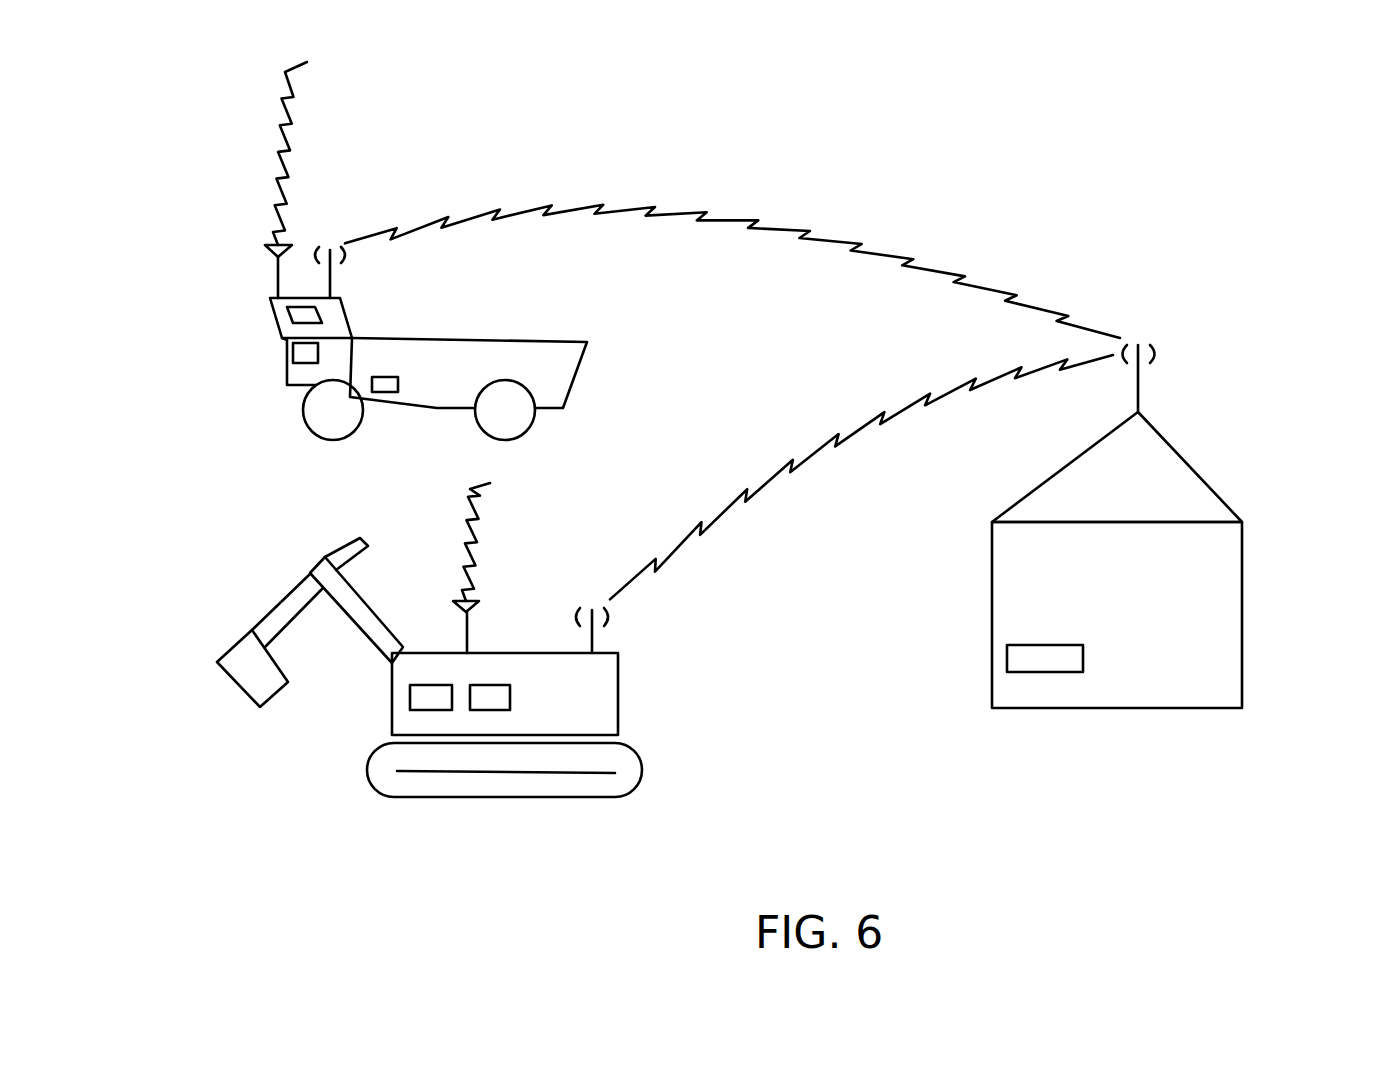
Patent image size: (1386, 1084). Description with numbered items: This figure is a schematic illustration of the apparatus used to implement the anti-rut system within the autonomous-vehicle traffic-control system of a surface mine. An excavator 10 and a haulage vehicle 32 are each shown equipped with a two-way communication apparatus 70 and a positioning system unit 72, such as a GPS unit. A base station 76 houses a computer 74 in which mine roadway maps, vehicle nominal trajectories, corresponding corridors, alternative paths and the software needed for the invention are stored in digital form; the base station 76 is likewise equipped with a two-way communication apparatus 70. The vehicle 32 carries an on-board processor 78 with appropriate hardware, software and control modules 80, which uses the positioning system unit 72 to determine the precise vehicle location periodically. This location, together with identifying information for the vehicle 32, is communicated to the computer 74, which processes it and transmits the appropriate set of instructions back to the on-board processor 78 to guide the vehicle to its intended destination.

The excavator 10 is at (630, 684).
The haulage vehicle 32 is at (590, 360).
The two-way communication apparatus 70 is at (332, 277).
The positioning system unit 72 is at (278, 262).
The computer 74 is at (1043, 657).
The base station 76 is at (1254, 604).
The on-board processor 78 is at (303, 352).
The control modules 80 is at (395, 393).